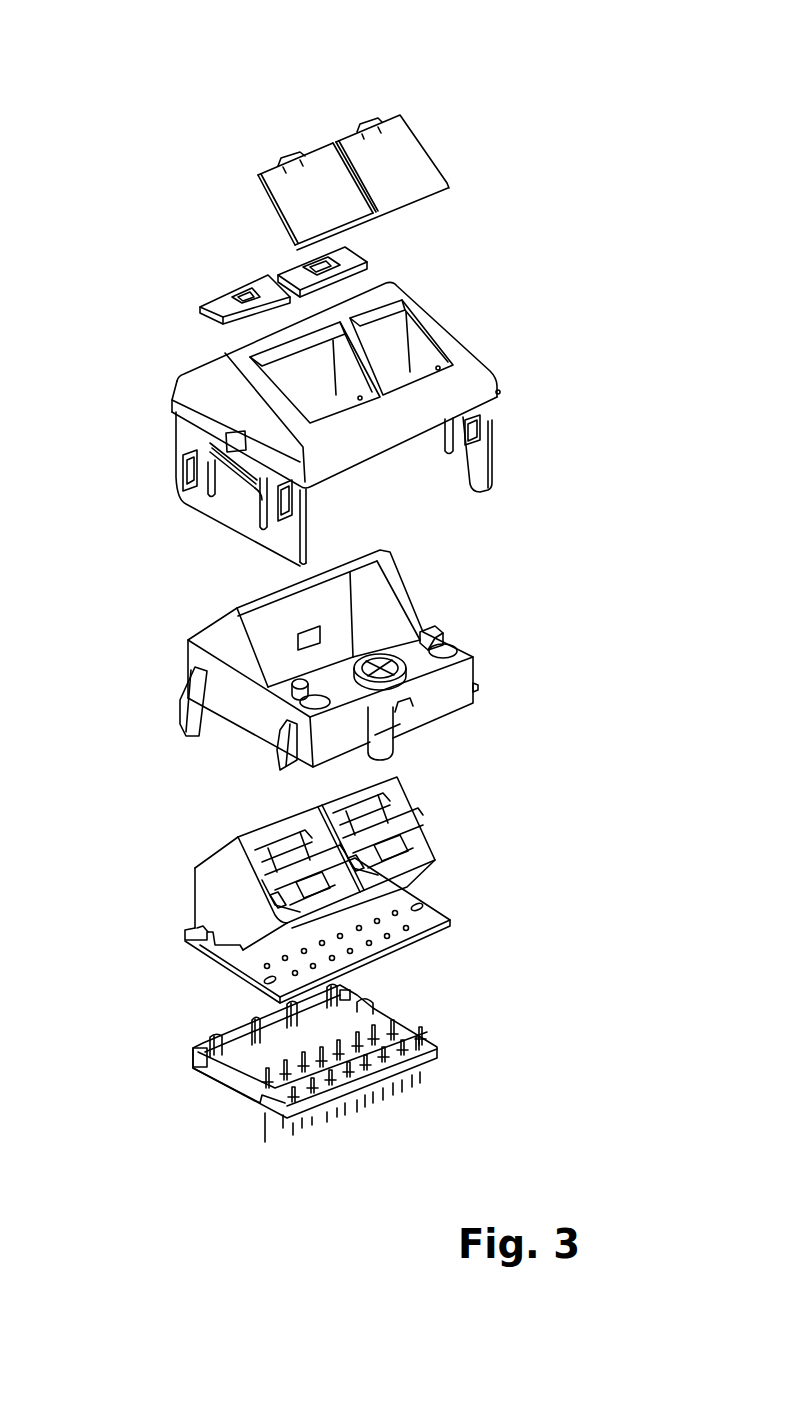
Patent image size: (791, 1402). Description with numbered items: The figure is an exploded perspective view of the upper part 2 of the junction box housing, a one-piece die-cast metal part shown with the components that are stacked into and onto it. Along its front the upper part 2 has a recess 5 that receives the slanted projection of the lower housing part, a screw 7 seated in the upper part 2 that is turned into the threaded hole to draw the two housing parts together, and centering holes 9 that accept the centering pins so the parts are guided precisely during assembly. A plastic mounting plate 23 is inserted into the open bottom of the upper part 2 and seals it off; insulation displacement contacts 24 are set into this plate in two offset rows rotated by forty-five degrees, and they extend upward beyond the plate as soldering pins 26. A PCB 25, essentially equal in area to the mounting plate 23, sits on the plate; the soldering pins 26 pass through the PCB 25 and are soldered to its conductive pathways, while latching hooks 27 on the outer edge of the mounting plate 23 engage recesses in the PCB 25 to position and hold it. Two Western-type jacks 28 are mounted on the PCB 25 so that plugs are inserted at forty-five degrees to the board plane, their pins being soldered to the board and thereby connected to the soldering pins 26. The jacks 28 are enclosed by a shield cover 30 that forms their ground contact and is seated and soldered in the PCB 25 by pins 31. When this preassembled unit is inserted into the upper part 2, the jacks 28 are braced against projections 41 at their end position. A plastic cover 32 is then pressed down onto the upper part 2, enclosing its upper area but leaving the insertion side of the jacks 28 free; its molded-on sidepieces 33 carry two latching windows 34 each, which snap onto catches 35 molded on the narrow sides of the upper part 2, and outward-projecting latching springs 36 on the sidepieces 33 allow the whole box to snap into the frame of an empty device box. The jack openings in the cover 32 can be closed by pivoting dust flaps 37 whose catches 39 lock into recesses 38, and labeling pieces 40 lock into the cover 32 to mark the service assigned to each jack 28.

The upper part 2 is at (283, 658).
The recess 5 is at (477, 723).
The screw 7 is at (463, 753).
The centering holes 9 is at (439, 654).
The mounting plate 23 is at (343, 1040).
The insulation displacement contacts 24 is at (342, 1128).
The PCB 25 is at (361, 930).
The soldering pins 26 is at (410, 1052).
The latching hooks 27 is at (229, 1020).
The jacks 28 is at (283, 845).
The shield cover 30 is at (228, 902).
The pins 31 is at (162, 955).
The cover 32 is at (379, 385).
The sidepieces 33 is at (332, 451).
The latching windows 34 is at (330, 464).
The catches 35 is at (350, 725).
The latching springs 36 is at (235, 472).
The dust flaps 37 is at (396, 144).
The recesses 38 is at (387, 317).
The catches 39 is at (295, 122).
The labeling pieces 40 is at (258, 247).
The projections 41 is at (446, 617).